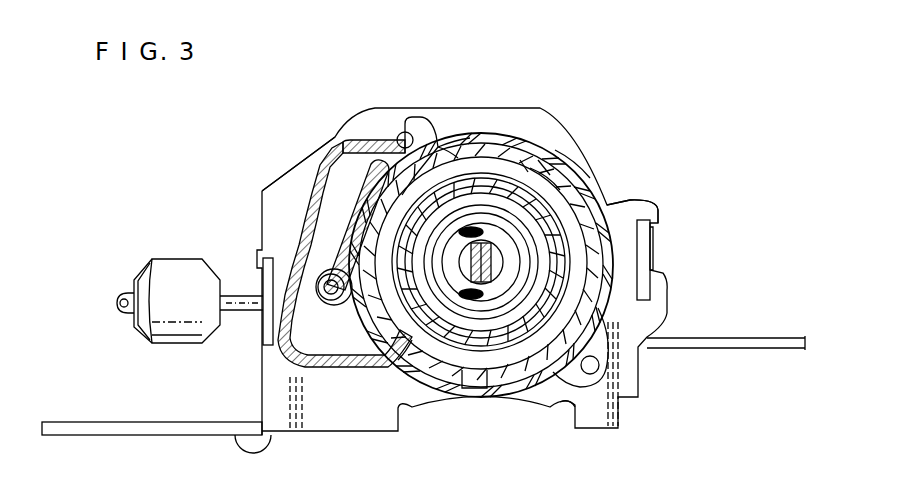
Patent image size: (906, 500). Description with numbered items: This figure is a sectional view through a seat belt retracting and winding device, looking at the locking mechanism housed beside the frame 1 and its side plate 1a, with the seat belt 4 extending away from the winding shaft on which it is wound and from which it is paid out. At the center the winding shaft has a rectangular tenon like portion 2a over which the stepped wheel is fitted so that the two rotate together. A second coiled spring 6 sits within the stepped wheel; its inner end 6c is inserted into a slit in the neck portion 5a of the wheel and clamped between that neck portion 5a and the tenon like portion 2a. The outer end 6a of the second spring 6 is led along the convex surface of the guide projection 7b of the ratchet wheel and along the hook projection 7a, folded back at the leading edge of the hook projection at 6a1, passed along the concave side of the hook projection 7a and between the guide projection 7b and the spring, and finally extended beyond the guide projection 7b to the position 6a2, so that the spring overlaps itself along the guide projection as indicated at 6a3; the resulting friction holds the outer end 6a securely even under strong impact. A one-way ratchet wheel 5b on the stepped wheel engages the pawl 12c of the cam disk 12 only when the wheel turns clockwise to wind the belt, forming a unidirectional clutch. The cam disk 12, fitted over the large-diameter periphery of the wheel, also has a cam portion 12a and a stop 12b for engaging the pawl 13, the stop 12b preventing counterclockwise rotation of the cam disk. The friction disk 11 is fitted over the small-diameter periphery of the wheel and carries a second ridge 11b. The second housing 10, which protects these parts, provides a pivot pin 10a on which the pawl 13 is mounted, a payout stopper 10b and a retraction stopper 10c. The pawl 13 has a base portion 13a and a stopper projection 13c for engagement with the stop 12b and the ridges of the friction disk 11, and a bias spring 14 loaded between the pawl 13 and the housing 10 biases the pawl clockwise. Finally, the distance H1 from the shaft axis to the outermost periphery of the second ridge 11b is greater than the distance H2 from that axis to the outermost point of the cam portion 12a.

The frame 1 is at (152, 437).
The side plate 1a is at (623, 248).
The tenon like portion 2a is at (456, 298).
The seat belt 4 is at (726, 340).
The neck portion of the wheel 5a is at (430, 370).
The ratchet wheel 5b is at (510, 390).
The second coiled spring 6 is at (604, 231).
The outer end of the second spring 6a is at (563, 283).
The folded-back portion of the outer end 6a1 is at (605, 357).
The extended end position 6a2 is at (461, 166).
The overlapped portion of the second spring 6a3 is at (577, 172).
The inner end of the second spring 6c is at (550, 390).
The hook projection 7a is at (592, 200).
The guide projection 7b is at (578, 185).
The second housing 10 is at (404, 126).
The pivot pin 10a is at (328, 300).
The payout stopper 10b is at (627, 197).
The retraction stopper 10c is at (470, 389).
The friction disk 11 is at (442, 152).
The second ridge 11b is at (325, 214).
The cam disk 12 is at (515, 166).
The cam portion 12a is at (541, 170).
The stop 12b is at (545, 165).
The pawl of the cam disk 12c is at (405, 365).
The pawl 13 is at (335, 205).
The base portion of the pawl 13a is at (338, 305).
The stopper projection of the pawl 13c is at (382, 150).
The bias spring 14 is at (323, 237).
The distance to second ridge H1 is at (400, 230).
The distance to cam portion H2 is at (524, 160).